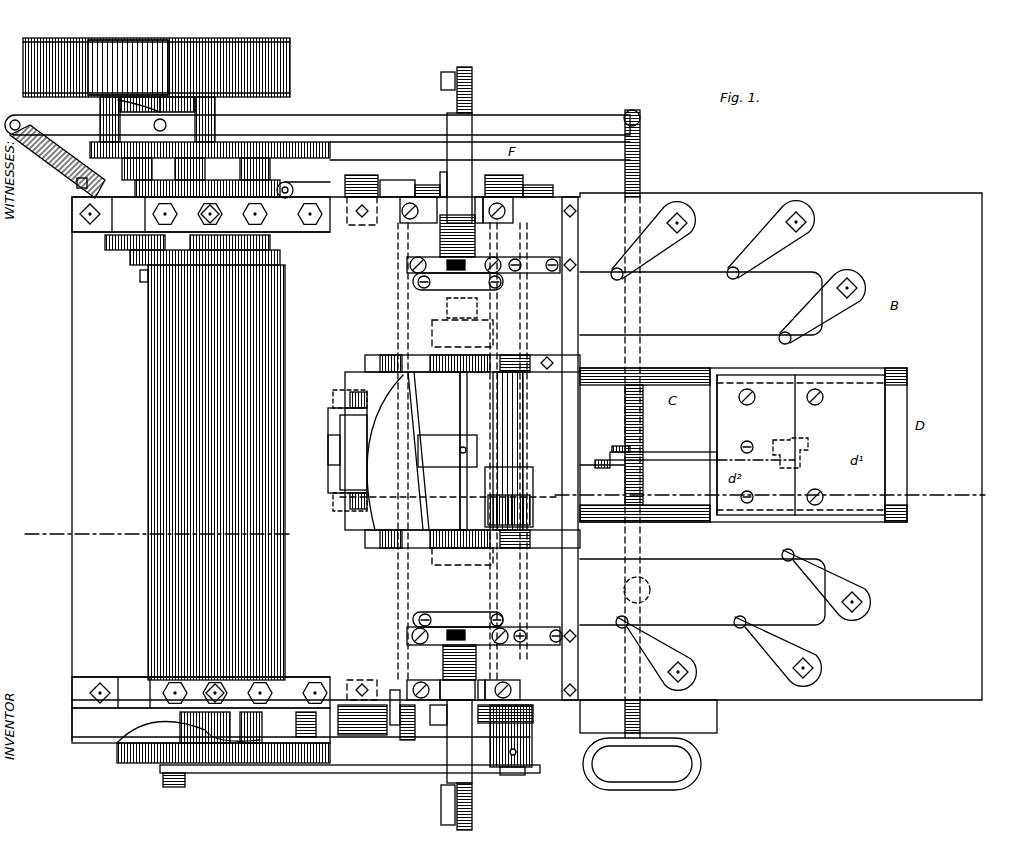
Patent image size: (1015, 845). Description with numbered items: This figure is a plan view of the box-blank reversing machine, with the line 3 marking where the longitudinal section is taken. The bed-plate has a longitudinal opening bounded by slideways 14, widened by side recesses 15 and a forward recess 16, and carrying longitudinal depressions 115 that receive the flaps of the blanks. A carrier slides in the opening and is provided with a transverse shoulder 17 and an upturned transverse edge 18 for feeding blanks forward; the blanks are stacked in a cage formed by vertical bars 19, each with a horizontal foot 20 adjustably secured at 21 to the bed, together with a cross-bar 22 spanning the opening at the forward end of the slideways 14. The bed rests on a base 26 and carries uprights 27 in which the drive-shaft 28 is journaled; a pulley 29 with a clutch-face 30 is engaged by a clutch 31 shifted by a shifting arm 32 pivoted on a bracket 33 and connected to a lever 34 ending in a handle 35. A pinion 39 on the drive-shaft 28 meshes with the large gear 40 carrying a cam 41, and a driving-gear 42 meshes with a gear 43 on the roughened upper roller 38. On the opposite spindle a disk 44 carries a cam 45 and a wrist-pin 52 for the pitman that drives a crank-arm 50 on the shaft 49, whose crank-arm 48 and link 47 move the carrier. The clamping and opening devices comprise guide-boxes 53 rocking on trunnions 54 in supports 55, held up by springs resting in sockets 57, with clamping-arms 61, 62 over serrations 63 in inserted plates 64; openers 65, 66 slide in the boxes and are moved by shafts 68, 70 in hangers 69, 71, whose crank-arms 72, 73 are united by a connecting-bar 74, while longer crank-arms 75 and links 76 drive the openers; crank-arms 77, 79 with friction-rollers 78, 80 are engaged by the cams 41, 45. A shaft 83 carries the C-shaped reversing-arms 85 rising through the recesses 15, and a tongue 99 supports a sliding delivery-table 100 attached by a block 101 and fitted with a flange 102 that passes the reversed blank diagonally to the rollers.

The section line 3 is at (511, 510).
The slideway 14 is at (696, 355).
The recess 15 is at (495, 355).
The recess 16 is at (328, 418).
The transverse shoulder 17 is at (795, 440).
The upturned transverse edge 18 is at (715, 445).
The vertical bar 19 is at (615, 282).
The horizontal foot 20 is at (672, 240).
The securing point 21 is at (813, 222).
The cross-bar 22 is at (580, 445).
The base 26 is at (717, 720).
The upright 27 is at (272, 222).
The drive-shaft 28 is at (705, 193).
The pulley 29 is at (290, 76).
The clutch-face 30 is at (136, 97).
The clutch 31 is at (118, 103).
The shifting arm 32 is at (316, 115).
The bracket 33 is at (70, 170).
The lever 34 is at (640, 165).
The handle 35 is at (700, 752).
The upper roller 38 is at (148, 438).
The pinion 39 is at (185, 138).
The large gear 40 is at (330, 152).
The cam 41 is at (360, 175).
The driving-gear 42 is at (207, 181).
The gear 43 is at (201, 214).
The disk 44 is at (214, 730).
The cam 45 is at (150, 722).
The link 47 is at (697, 462).
The crank-arm 48 is at (594, 468).
The shaft 49 is at (520, 433).
The crank-arm 50 is at (425, 735).
The wrist-pin 52 is at (163, 787).
The guide-box 53 is at (458, 457).
The trunnion 54 is at (500, 196).
The support 55 is at (417, 223).
The socket 57 is at (284, 773).
The clamping-arm 61 is at (472, 270).
The clamping-arm 62 is at (447, 290).
The serrations 63 is at (447, 286).
The inserted plate 64 is at (505, 290).
The right-hand opener 65 is at (462, 735).
The left-hand opener 66 is at (458, 162).
The short shaft 68 is at (428, 185).
The hanger 69 is at (395, 178).
The shaft 70 is at (439, 721).
The hanger 71 is at (370, 735).
The crank-arm 72 is at (396, 732).
The crank-arm 73 is at (397, 188).
The connecting-bar 74 is at (405, 620).
The crank-arm 75 is at (472, 99).
The link 76 is at (447, 101).
The crank-arm 77 is at (303, 190).
The friction-roller 78 is at (298, 212).
The crank-arm 79 is at (316, 712).
The friction-roller 80 is at (306, 693).
The shaft 83 is at (460, 393).
The reversing-arm 85 is at (393, 342).
The tongue 99 is at (328, 460).
The delivery-table 100 is at (402, 451).
The block 101 is at (354, 452).
The flange 102 is at (418, 470).
The longitudinal depression 115 is at (702, 448).